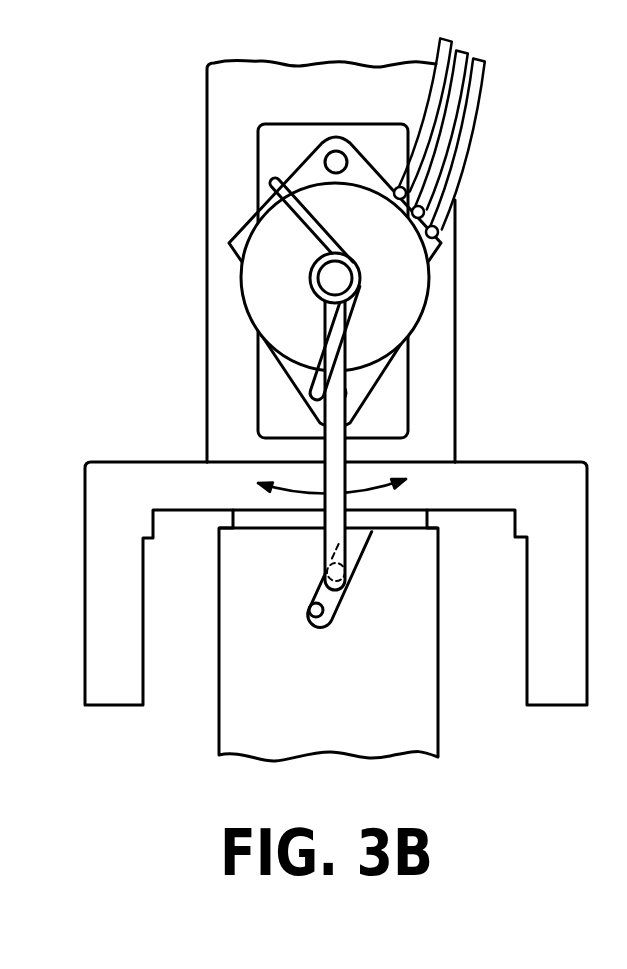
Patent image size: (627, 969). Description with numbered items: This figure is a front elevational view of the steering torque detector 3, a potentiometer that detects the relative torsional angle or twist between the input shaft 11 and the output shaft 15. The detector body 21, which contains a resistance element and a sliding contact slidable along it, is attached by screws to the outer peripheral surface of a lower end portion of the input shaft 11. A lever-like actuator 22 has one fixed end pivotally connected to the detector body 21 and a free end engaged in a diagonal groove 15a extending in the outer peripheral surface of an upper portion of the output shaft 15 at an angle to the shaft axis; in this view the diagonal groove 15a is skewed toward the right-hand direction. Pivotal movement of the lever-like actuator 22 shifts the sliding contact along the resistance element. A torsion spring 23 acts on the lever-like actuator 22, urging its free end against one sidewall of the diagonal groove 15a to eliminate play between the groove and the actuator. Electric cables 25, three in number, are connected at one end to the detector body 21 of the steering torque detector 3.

The steering torque detector 3 is at (240, 172).
The input shaft 11 is at (441, 335).
The detector body 21 is at (257, 228).
The torsion spring 23 is at (313, 239).
The lever-like actuator 22 is at (318, 454).
The electric cables 25 is at (480, 120).
The output shaft 15 is at (422, 712).
The diagonal groove 15a is at (307, 631).